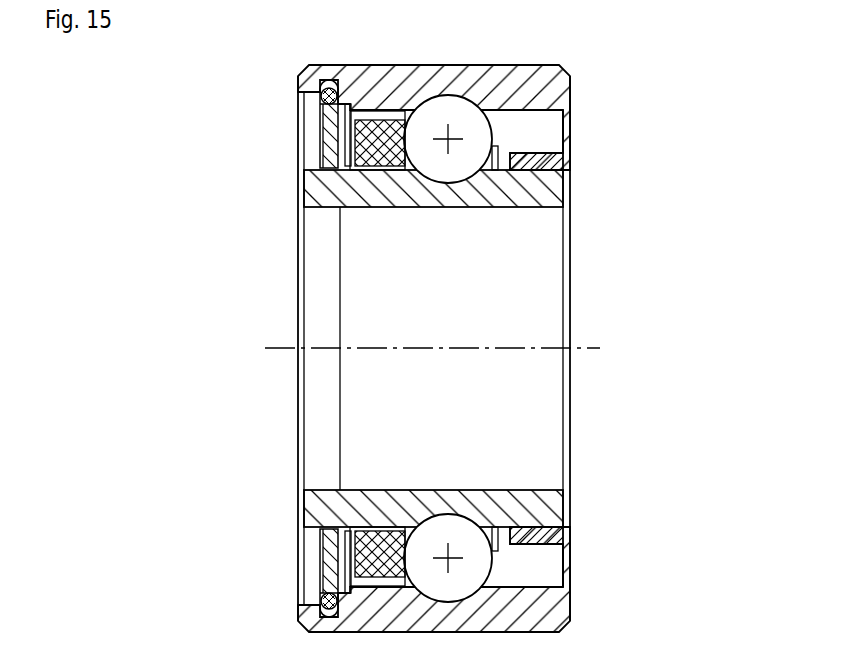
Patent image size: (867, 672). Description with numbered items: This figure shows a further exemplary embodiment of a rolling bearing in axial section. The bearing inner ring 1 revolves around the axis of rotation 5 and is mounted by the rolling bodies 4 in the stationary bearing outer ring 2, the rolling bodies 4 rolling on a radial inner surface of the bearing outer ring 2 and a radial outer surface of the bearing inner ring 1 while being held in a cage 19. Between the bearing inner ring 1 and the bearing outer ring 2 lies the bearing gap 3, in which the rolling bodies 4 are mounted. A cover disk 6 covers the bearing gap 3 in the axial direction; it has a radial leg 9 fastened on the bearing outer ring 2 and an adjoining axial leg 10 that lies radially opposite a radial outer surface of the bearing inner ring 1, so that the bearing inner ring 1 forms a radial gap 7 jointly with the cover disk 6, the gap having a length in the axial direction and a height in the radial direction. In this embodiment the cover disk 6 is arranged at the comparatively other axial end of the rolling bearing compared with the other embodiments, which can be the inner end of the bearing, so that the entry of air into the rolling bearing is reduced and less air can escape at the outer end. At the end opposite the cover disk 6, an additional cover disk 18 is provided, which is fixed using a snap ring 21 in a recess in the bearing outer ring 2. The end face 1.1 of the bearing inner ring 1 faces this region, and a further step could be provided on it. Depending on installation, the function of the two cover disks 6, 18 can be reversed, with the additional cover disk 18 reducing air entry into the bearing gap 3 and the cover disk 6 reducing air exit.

The bearing inner ring 1 is at (345, 187).
The end face 1.1 is at (302, 508).
The bearing outer ring 2 is at (300, 68).
The bearing gap 3 is at (540, 130).
The rolling bodies 4 is at (442, 172).
The axis of rotation 5 is at (600, 348).
The cover disk 6 is at (562, 102).
The radial gap 7 is at (555, 167).
The radial leg 9 is at (571, 75).
The axial leg 10 is at (512, 160).
The additional cover disk 18 is at (332, 139).
The cage 19 is at (375, 545).
The snap ring 21 is at (326, 96).